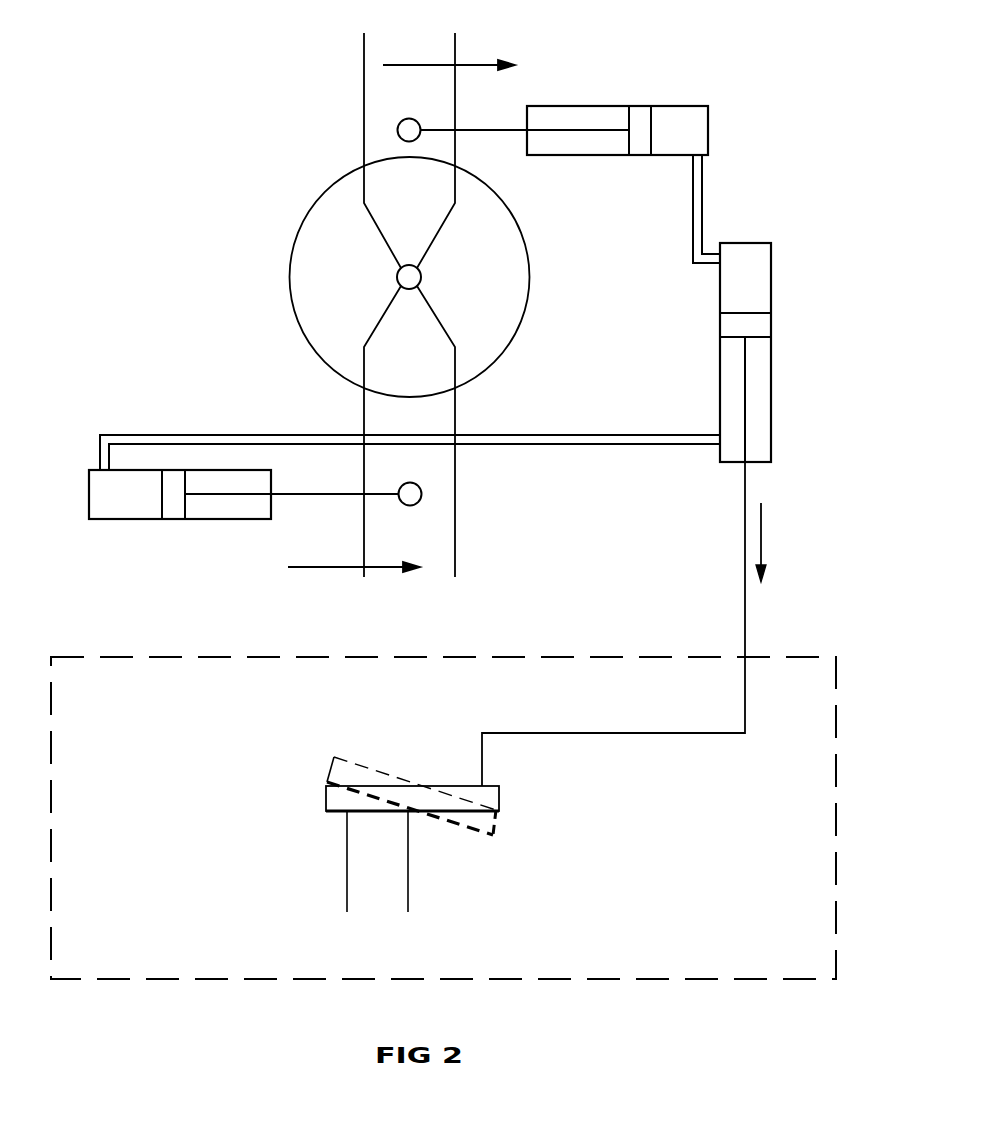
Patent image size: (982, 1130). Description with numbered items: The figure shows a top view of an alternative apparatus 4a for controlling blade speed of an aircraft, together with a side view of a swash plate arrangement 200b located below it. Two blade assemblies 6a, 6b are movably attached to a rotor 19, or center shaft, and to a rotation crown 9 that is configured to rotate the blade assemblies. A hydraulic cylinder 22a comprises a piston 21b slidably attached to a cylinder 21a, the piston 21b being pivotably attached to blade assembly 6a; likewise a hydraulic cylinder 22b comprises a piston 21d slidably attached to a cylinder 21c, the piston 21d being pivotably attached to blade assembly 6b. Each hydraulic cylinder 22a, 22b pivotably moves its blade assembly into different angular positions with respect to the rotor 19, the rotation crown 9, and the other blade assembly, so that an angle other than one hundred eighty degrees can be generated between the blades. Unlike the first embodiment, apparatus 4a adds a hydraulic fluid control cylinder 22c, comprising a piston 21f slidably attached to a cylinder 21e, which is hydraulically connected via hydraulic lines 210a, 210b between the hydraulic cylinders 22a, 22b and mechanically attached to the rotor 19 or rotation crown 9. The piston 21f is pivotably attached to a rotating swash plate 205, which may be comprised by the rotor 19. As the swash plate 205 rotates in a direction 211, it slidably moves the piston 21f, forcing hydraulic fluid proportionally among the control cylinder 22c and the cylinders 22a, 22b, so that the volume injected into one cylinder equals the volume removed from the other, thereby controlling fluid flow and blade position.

The apparatus 4a is at (203, 121).
The blade assembly 6a is at (336, 53).
The blade assembly 6b is at (489, 553).
The rotation crown 9 is at (505, 253).
The rotor 19 is at (380, 262).
The cylinder 21a is at (583, 157).
The piston 21b is at (486, 129).
The cylinder 21c is at (225, 521).
The piston 21d is at (317, 496).
The cylinder 21e is at (772, 402).
The piston 21f is at (745, 512).
The hydraulic cylinder 22a is at (674, 105).
The hydraulic cylinder 22b is at (128, 521).
The hydraulic fluid control cylinder 22c is at (772, 269).
The control unit 200b is at (208, 733).
The rotating swash plate 205 is at (452, 785).
The hydraulic line 210a is at (704, 203).
The hydraulic line 210b is at (598, 434).
The direction 211 is at (464, 904).